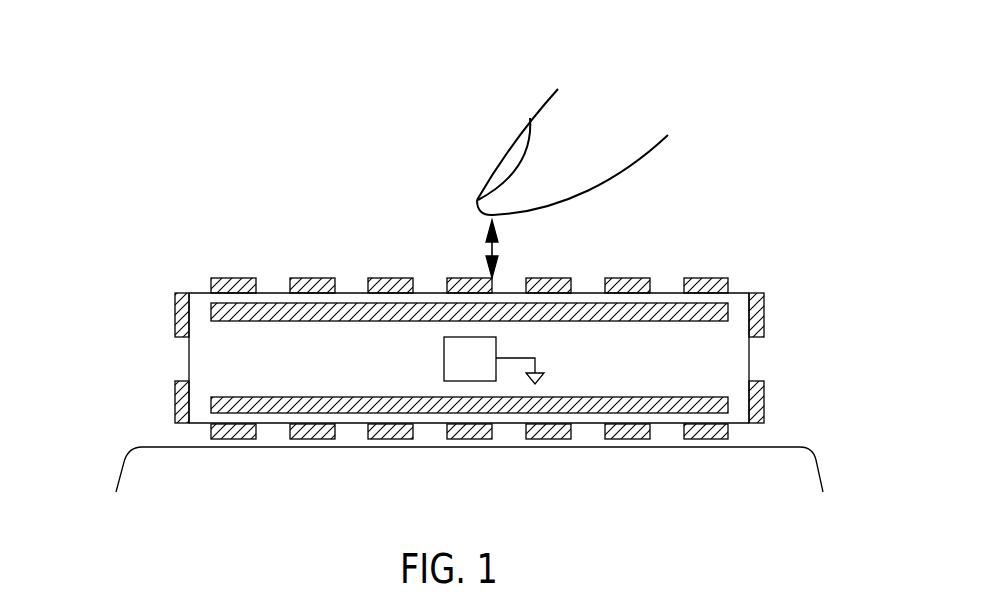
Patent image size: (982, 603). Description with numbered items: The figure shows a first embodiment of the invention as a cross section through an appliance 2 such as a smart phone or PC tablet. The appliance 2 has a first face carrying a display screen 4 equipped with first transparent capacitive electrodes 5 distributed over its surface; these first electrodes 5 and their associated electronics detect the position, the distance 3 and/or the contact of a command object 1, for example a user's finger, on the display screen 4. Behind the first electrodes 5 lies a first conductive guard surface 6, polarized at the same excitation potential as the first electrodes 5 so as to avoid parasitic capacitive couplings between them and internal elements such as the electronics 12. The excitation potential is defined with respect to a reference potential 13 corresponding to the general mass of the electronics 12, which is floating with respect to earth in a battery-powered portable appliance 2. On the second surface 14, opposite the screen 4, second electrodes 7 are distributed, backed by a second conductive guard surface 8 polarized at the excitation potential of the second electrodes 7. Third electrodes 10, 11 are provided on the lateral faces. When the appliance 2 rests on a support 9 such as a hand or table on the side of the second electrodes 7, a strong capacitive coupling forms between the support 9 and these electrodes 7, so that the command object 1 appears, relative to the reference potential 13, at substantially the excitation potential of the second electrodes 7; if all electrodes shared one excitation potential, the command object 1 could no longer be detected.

The command object 1 is at (605, 123).
The appliance 2 is at (122, 310).
The distance 3 is at (487, 249).
The display screen 4 is at (202, 292).
The first transparent capacitive electrodes 5 is at (628, 278).
The first conductive guard surface 6 is at (730, 308).
The second electrodes 7 is at (702, 439).
The second conductive guard surface 8 is at (210, 405).
The support 9 is at (813, 458).
The third electrode 10 is at (765, 317).
The third electrode 11 is at (765, 401).
The electronics 12 is at (444, 372).
The reference potential 13 is at (538, 381).
The second surface 14 is at (742, 425).